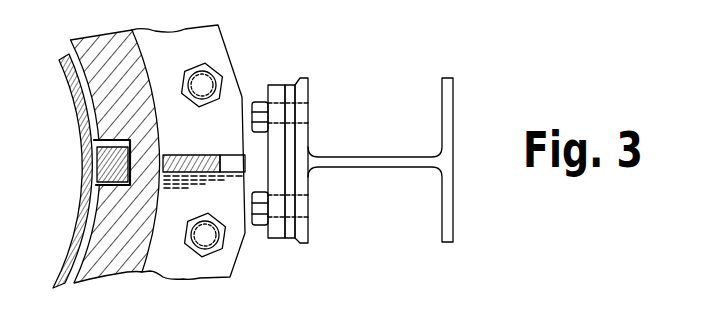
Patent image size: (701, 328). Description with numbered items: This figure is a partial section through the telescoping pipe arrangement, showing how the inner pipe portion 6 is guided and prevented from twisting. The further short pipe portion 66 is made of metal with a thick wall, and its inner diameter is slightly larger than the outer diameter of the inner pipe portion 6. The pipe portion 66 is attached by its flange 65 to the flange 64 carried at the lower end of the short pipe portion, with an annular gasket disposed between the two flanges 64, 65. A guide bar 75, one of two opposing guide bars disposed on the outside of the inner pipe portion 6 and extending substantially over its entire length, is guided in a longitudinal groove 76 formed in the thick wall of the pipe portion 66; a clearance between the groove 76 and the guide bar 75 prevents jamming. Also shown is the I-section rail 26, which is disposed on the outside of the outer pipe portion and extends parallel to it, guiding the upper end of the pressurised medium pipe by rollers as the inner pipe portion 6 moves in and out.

The inner pipe portion 6 is at (76, 248).
The rail 26 is at (448, 112).
The flange 64 is at (251, 238).
The flange 65 is at (203, 268).
The short pipe portion 66 is at (117, 260).
The guide bar 75 is at (91, 167).
The longitudinal grooves 76 is at (130, 148).